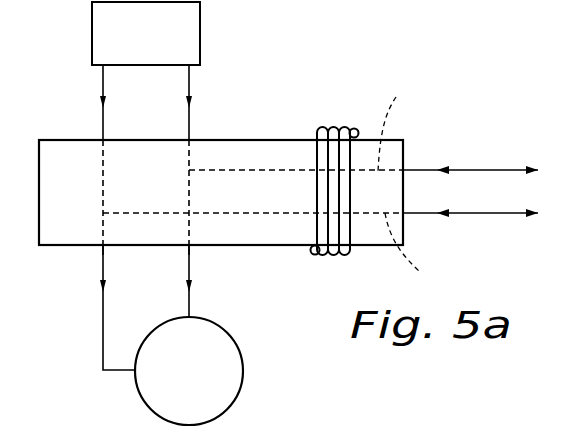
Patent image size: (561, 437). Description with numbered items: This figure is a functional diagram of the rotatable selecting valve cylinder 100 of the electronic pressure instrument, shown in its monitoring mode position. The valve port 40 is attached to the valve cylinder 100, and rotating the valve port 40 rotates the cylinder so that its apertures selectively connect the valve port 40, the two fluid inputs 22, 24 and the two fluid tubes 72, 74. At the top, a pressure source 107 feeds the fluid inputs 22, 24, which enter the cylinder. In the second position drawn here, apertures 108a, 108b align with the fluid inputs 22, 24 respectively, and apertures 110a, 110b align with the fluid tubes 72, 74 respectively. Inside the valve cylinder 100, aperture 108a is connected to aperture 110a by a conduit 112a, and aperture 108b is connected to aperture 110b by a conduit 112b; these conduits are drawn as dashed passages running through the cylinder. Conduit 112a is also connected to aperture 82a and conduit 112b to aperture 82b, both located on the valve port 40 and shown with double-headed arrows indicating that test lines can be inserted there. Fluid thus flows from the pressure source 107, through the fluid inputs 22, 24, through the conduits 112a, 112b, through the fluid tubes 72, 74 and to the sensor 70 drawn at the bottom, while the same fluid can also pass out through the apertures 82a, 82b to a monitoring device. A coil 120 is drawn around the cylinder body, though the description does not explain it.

The pressure source 107 is at (92, 28).
The fluid input 22 is at (103, 80).
The fluid input 24 is at (189, 80).
The aperture 108a is at (102, 137).
The aperture 108b is at (188, 137).
The valve cylinder 100 is at (268, 108).
The coil 120 is at (332, 127).
The conduit 112a is at (105, 228).
The conduit 112b is at (191, 228).
The valve port 40 is at (404, 147).
The aperture 82a is at (418, 168).
The aperture 82b is at (413, 215).
The aperture 110a is at (100, 249).
The aperture 110b is at (186, 249).
The fluid tube 72 is at (103, 320).
The fluid tube 74 is at (190, 303).
The sensor 70 is at (243, 372).